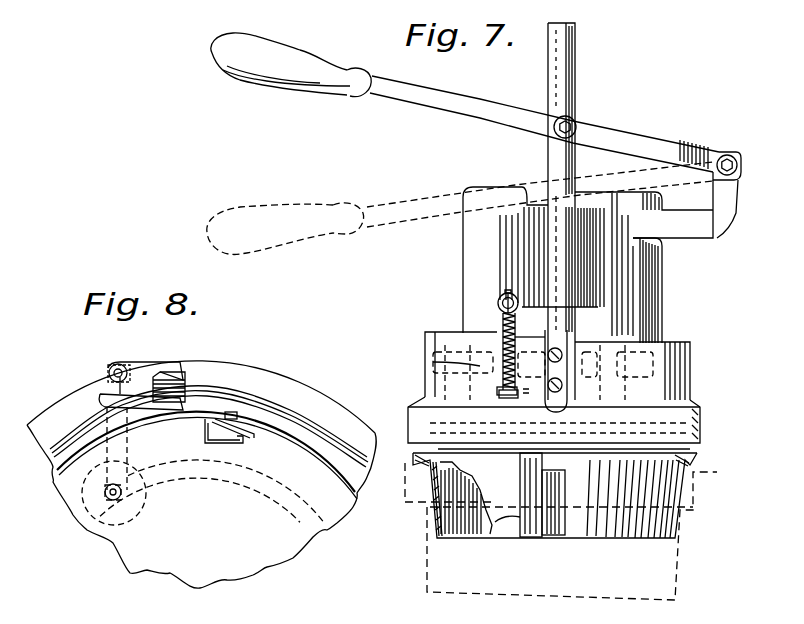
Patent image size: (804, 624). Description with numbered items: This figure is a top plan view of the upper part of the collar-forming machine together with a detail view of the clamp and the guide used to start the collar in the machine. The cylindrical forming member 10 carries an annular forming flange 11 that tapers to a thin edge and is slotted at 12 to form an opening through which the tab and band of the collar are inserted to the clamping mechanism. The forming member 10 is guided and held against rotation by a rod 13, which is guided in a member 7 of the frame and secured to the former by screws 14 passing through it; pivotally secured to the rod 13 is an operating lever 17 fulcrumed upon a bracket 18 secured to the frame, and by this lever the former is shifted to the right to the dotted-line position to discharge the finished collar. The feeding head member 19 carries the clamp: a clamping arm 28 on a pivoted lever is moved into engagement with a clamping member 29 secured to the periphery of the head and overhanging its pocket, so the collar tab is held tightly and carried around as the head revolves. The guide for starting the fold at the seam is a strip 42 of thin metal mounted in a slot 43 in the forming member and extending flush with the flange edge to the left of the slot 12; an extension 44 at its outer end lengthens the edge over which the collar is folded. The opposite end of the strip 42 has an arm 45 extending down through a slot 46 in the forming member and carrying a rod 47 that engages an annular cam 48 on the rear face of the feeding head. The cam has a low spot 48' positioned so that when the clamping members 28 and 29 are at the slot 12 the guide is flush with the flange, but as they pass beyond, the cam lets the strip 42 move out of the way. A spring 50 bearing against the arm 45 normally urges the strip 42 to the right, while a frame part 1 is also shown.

In FIG. 7, the housing frame 1 is at (642, 312).
In FIG. 7, the member of the frame 7 is at (565, 265).
In FIG. 7, the cylindrical forming member 10 is at (700, 440).
In FIG. 8, the cylindrical forming member 10 is at (357, 480).
In FIG. 7, the forming flange 11 is at (627, 520).
In FIG. 8, the forming flange 11 is at (297, 437).
In FIG. 7, the slot 12 is at (562, 497).
In FIG. 8, the slot 12 is at (231, 412).
In FIG. 7, the rod 13 is at (578, 99).
In FIG. 7, the screws 14 is at (600, 383).
In FIG. 7, the operating lever 17 is at (634, 136).
In FIG. 7, the bracket 18 is at (732, 198).
In FIG. 8, the feeding head member 19 is at (201, 506).
In FIG. 8, the clamping arm 28 is at (246, 446).
In FIG. 8, the clamping member 29 is at (237, 417).
In FIG. 7, the strip 42 is at (533, 512).
In FIG. 8, the strip 42 is at (187, 380).
In FIG. 7, the slot 43 is at (522, 453).
In FIG. 8, the slot 43 is at (185, 370).
In FIG. 7, the extension 44 is at (512, 536).
In FIG. 7, the arm 45 is at (548, 384).
In FIG. 8, the arm 45 is at (130, 367).
In FIG. 7, the slot 46 is at (497, 362).
In FIG. 7, the rod 47 is at (504, 292).
In FIG. 7, the annular cam 48 is at (581, 531).
In FIG. 7, the low spot 48' is at (391, 529).
In FIG. 7, the spring 50 is at (497, 317).